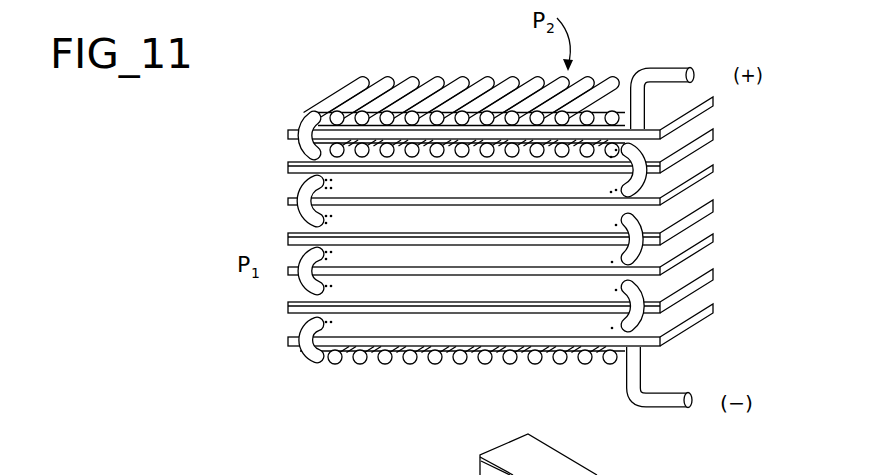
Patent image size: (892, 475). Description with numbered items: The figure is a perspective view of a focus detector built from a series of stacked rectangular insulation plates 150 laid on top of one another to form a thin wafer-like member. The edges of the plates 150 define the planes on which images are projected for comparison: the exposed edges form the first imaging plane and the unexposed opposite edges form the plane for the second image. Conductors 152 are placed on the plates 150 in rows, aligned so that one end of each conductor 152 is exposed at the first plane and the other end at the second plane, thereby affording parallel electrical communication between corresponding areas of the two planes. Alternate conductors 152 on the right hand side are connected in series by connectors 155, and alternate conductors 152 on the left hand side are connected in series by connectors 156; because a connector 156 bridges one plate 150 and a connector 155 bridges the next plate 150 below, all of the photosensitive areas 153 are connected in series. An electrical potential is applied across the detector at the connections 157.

The insulation plates 150 is at (288, 135).
The conductors 152 is at (387, 83).
The photosensitive areas 153 is at (330, 110).
The connectors 155 is at (703, 205).
The connectors 156 is at (308, 124).
The connections 157 is at (665, 67).